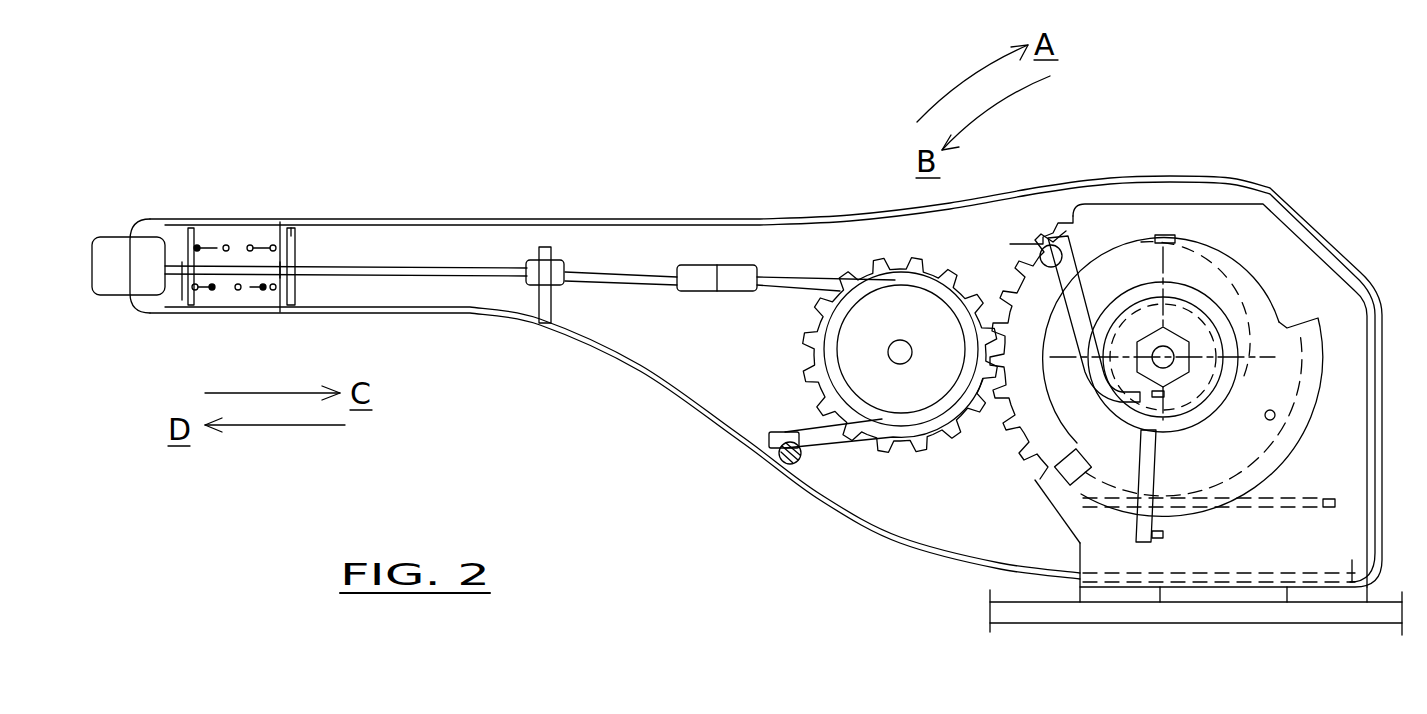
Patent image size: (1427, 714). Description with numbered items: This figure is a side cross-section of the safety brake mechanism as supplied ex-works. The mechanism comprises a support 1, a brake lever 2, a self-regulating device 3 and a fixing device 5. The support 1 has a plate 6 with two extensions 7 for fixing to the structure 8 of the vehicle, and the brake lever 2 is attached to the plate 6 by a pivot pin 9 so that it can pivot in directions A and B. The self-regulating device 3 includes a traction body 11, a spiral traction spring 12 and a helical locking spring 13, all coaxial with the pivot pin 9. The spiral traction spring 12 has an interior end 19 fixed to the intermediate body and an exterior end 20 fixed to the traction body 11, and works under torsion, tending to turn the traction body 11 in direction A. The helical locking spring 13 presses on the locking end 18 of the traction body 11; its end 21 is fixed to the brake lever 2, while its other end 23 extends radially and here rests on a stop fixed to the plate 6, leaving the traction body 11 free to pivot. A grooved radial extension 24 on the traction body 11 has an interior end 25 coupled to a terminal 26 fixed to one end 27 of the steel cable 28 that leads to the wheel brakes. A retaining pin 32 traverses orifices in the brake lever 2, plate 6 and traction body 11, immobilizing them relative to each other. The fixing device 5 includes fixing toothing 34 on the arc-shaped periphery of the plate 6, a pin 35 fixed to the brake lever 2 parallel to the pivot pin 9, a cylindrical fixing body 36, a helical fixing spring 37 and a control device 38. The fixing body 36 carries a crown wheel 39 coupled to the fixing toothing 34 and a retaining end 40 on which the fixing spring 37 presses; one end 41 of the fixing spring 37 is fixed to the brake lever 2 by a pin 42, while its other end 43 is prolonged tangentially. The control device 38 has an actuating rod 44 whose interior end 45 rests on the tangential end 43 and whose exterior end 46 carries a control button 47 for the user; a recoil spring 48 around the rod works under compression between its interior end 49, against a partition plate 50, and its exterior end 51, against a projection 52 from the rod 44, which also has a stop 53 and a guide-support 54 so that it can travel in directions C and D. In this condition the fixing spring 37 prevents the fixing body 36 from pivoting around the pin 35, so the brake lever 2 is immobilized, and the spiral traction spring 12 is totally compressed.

The support 1 is at (992, 450).
The brake lever 2 is at (628, 383).
The self-regulating device 3 is at (1200, 232).
The fixing device 5 is at (782, 314).
The plate 6 is at (1350, 562).
The extensions 7 is at (1155, 592).
The structure 8 is at (1310, 612).
The pivot pin 9 is at (1178, 360).
The traction body 11 is at (1277, 322).
The spiral traction spring 12 is at (1233, 285).
The helical locking spring 13 is at (1143, 295).
The locking end 18 is at (1130, 378).
The interior end 19 is at (1166, 396).
The exterior end 20 is at (1165, 235).
The end of locking spring 21 is at (1043, 240).
The radial end of locking spring 23 is at (1138, 528).
The grooved radial extension 24 is at (1320, 388).
The interior end 25 is at (1087, 487).
The terminal 26 is at (1048, 494).
The end of steel cable 27 is at (1090, 482).
The steel cable 28 is at (1315, 505).
The retaining pin 32 is at (1268, 420).
The fixing toothing 34 is at (1002, 298).
The pin 35 is at (900, 364).
The fixing body 36 is at (858, 252).
The helical fixing spring 37 is at (812, 348).
The control device 38 is at (320, 248).
The crown wheel 39 is at (895, 262).
The retaining end 40 is at (866, 385).
The end of fixing spring 41 is at (784, 438).
The pin 42 is at (780, 462).
The tangential end 43 is at (732, 266).
The actuating rod 44 is at (428, 267).
The interior end 45 is at (690, 266).
The exterior end 46 is at (176, 260).
The control button 47 is at (120, 255).
The recoil spring 48 is at (229, 246).
The interior end 49 is at (264, 292).
The partition plate 50 is at (283, 300).
The exterior end 51 is at (198, 246).
The projection 52 is at (183, 300).
The stop 53 is at (296, 236).
The guide-support 54 is at (548, 322).